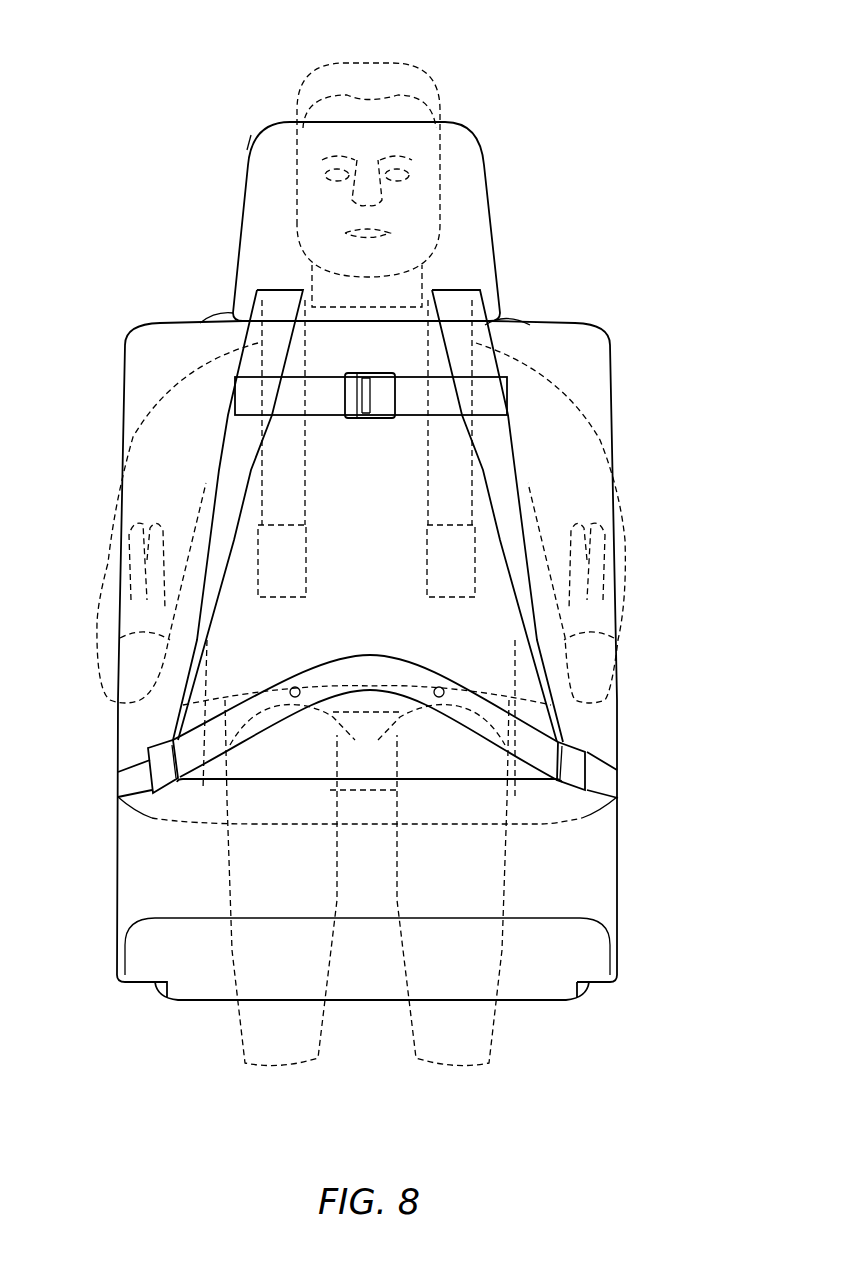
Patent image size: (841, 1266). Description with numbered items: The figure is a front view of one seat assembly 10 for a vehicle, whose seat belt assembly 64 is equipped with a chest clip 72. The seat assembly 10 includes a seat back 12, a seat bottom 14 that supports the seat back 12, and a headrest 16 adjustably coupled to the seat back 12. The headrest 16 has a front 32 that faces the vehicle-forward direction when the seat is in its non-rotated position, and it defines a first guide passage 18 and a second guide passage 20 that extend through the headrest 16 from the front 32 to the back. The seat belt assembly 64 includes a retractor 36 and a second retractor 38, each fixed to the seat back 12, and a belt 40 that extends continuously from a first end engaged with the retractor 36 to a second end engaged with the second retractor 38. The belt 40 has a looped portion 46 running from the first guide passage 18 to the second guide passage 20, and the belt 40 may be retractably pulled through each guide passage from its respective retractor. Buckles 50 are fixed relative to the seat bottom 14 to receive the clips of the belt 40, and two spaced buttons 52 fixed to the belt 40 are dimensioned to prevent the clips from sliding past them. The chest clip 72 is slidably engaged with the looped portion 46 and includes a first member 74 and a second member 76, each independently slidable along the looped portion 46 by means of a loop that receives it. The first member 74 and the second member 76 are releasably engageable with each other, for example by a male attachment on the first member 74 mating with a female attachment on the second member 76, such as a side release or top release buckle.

The seat assembly 10 is at (108, 57).
The seat back 12 is at (122, 395).
The seat bottom 14 is at (618, 943).
The headrest 16 is at (453, 122).
The first guide passage 18 is at (255, 292).
The second guide passage 20 is at (478, 292).
The front 32 is at (262, 182).
The retractor 36 is at (282, 600).
The second retractor 38 is at (455, 603).
The belt 40 is at (485, 328).
The looped portion 46 is at (511, 429).
The buckles 50 is at (158, 793).
The buttons 52 is at (288, 692).
The seat belt assembly 64 is at (213, 311).
The chest clip 72 is at (288, 429).
The first member 74 is at (315, 420).
The second member 76 is at (430, 370).